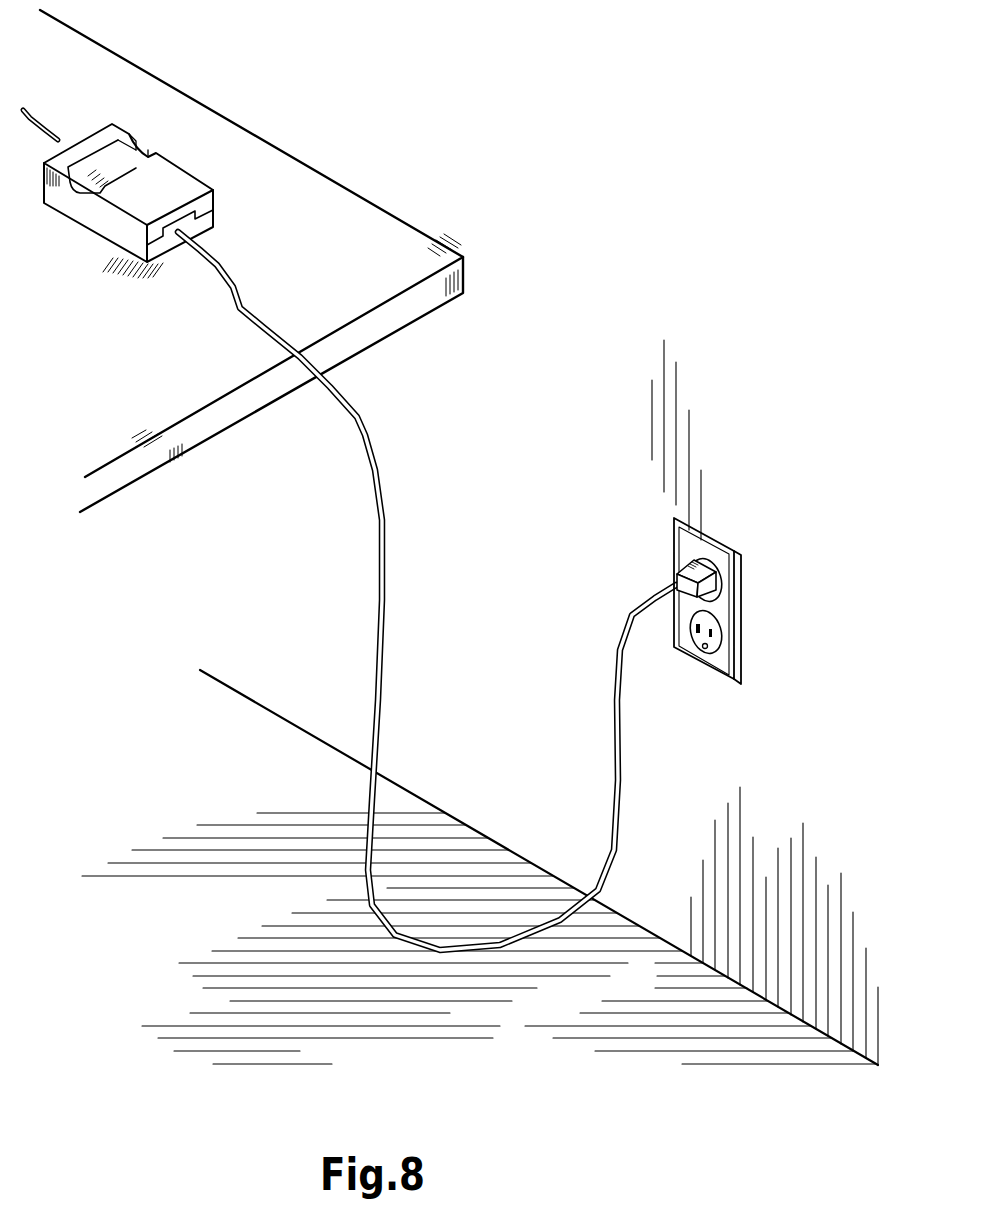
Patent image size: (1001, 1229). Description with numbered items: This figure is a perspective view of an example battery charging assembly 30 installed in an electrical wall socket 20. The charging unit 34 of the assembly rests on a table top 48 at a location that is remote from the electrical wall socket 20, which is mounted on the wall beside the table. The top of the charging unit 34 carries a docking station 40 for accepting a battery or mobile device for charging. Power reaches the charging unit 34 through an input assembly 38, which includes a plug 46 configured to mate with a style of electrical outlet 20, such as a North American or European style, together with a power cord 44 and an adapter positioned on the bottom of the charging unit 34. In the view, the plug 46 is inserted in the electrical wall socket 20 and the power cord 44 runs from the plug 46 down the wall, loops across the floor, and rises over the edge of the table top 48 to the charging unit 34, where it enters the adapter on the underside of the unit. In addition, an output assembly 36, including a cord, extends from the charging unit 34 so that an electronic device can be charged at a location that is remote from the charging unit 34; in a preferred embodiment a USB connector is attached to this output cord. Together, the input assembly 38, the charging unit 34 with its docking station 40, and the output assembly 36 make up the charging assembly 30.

The electrical wall socket 20 is at (742, 617).
The battery charging assembly 30 is at (169, 165).
The charging unit 34 is at (185, 190).
The output assembly 36 is at (63, 113).
The input assembly 38 is at (424, 636).
The docking station 40 is at (107, 173).
The power cord 44 is at (383, 515).
The plug 46 is at (688, 570).
The table top 48 is at (375, 238).